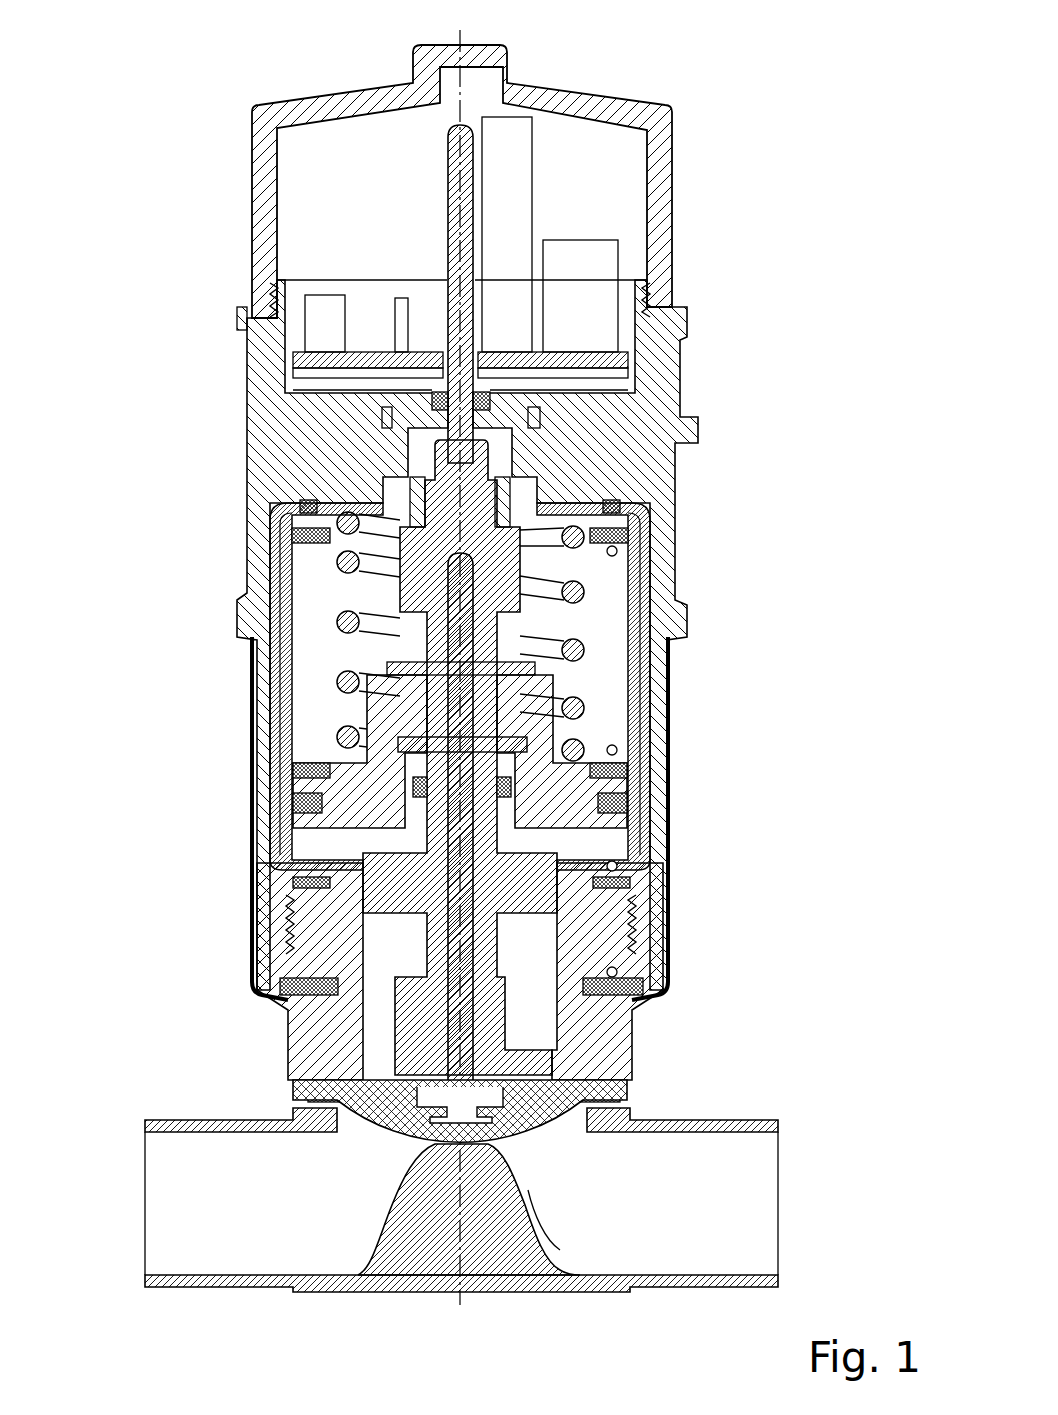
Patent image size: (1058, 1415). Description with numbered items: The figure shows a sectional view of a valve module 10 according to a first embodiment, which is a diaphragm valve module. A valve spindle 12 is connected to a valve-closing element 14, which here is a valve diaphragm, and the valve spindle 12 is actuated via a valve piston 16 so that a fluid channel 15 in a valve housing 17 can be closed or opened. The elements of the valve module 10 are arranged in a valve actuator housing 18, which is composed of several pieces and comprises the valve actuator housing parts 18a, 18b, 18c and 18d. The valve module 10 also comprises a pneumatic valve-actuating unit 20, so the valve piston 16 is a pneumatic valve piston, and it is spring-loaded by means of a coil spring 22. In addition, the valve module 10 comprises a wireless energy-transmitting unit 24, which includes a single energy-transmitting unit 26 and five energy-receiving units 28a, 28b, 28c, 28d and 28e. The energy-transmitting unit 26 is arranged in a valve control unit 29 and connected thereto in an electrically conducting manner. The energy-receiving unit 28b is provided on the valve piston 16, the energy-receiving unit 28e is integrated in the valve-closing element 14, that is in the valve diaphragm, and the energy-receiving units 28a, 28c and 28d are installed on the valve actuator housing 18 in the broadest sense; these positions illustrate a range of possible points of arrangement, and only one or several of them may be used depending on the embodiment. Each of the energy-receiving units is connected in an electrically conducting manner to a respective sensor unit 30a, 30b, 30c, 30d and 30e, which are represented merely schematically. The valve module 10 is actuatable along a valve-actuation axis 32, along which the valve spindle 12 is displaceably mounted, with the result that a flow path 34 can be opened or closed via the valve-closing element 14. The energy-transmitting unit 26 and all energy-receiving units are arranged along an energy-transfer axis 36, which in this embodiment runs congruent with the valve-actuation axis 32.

The valve module 10 is at (744, 80).
The valve spindle 12 is at (480, 850).
The valve-closing element 14 is at (308, 1093).
The fluid channel 15 is at (176, 1228).
The valve piston 16 is at (580, 800).
The valve housing 17 is at (306, 1284).
The valve actuator housing 18 is at (404, 562).
The valve actuator housing part 18a is at (266, 221).
The valve actuator housing part 18b is at (266, 366).
The valve actuator housing part 18c is at (262, 739).
The valve actuator housing part 18d is at (310, 1046).
The pneumatic valve-actuating unit 20 is at (716, 458).
The coil spring 22 is at (600, 585).
The wireless energy-transmitting unit 24 is at (744, 477).
The energy-transmitting unit 26 is at (620, 378).
The valve control unit 29 is at (598, 228).
The energy-receiving unit 28a is at (600, 538).
The energy-receiving unit 28b is at (600, 772).
The energy-receiving unit 28c is at (612, 876).
The energy-receiving unit 28d is at (600, 992).
The energy-receiving unit 28e is at (600, 1093).
The sensor unit 30a is at (617, 551).
The sensor unit 30b is at (617, 750).
The sensor unit 30c is at (617, 866).
The sensor unit 30d is at (617, 972).
The sensor unit 30e is at (572, 1106).
The valve-actuation axis 32 is at (430, 1246).
The flow path 34 is at (524, 1165).
The energy-transfer axis 36 is at (456, 1242).